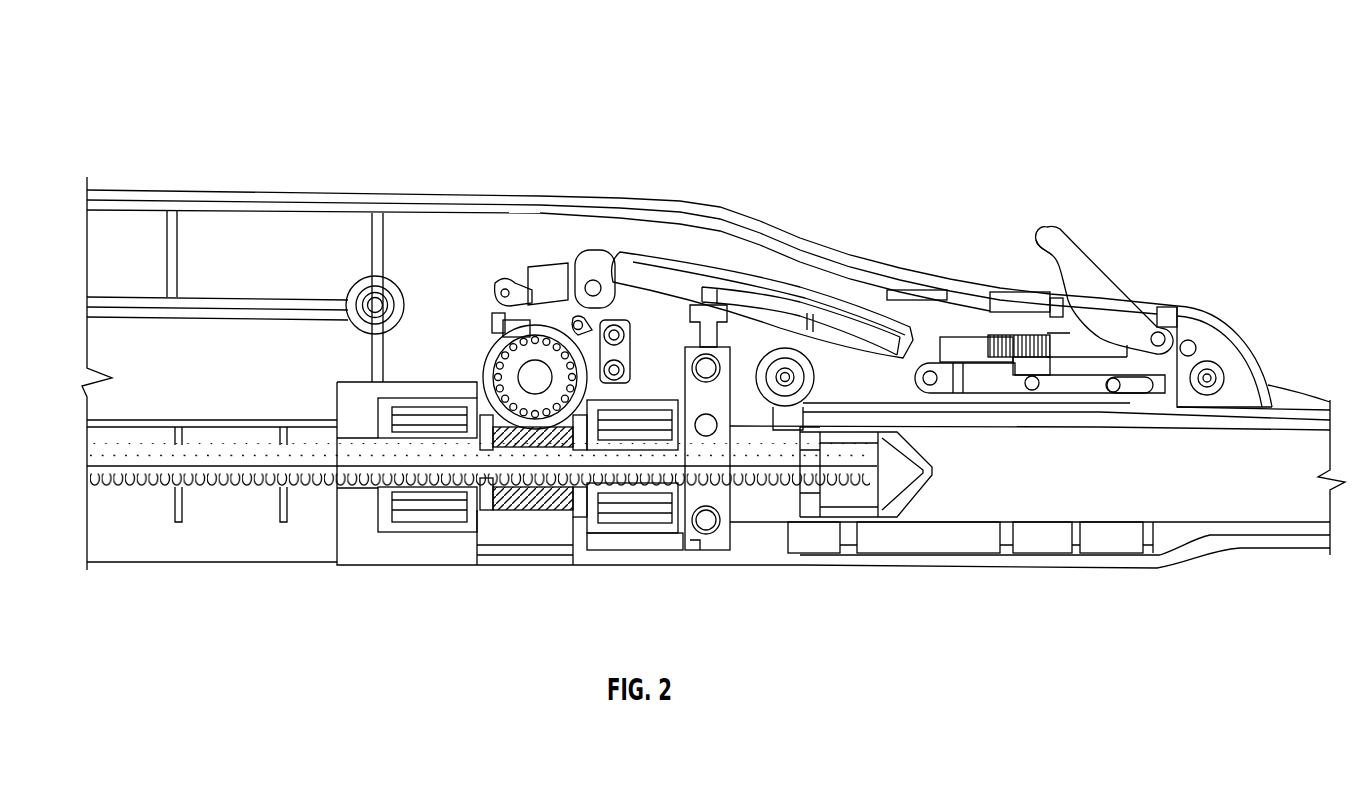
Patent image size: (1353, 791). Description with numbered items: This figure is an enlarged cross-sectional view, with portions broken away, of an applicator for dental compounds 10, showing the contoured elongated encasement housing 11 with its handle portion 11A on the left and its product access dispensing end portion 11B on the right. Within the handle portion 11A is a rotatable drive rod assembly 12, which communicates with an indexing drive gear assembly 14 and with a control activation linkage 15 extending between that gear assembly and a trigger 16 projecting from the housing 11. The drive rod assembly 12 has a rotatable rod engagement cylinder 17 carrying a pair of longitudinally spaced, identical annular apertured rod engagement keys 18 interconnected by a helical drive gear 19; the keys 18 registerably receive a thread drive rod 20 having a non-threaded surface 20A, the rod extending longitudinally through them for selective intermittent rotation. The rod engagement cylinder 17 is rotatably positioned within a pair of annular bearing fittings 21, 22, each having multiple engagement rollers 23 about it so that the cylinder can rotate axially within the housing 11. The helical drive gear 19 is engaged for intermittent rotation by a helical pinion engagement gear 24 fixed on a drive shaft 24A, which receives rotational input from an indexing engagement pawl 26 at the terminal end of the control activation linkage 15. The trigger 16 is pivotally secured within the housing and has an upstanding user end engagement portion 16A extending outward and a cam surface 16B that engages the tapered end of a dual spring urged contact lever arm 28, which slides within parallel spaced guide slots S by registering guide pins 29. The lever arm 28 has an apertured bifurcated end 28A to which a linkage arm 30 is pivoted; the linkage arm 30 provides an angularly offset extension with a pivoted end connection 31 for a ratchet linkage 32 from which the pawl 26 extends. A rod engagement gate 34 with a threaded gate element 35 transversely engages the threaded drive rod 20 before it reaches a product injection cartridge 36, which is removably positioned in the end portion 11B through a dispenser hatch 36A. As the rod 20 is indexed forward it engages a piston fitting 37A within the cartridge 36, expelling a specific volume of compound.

The applicator for dental compounds 10 is at (1010, 178).
The encasement housing 11 is at (700, 210).
The handle portion 11A is at (200, 172).
The product access dispensing end portion 11B is at (1192, 258).
The drive rod assembly 12 is at (328, 363).
The indexing drive gear assembly 14 is at (463, 330).
The control activation linkage 15 is at (797, 252).
The trigger 16 is at (1102, 254).
The user end engagement portion 16A is at (1055, 228).
The cam surface 16B is at (1080, 335).
The rod engagement cylinder 17 is at (603, 548).
The rod engagement keys 18 is at (420, 507).
The helical drive gear 19 is at (492, 558).
The thread drive rod 20 is at (234, 490).
The non-threaded surface 20A is at (150, 470).
The annular bearing fitting 21 is at (335, 548).
The annular bearing fitting 22 is at (768, 276).
The engagement rollers 23 is at (445, 405).
The helical pinion engagement gear 24 is at (378, 300).
The drive shaft 24A is at (560, 508).
The indexing engagement pawl 26 is at (490, 350).
The contact lever arm 28 is at (1012, 383).
The apertured bifurcated end 28A is at (928, 393).
The guide pins 29 is at (1210, 378).
The linkage arm 30 is at (933, 366).
The pivoted end connection 31 is at (605, 250).
The ratchet linkage 32 is at (547, 262).
The rod engagement gate 34 is at (743, 523).
The threaded gate element 35 is at (692, 537).
The product injection cartridge 36 is at (1103, 510).
The dispenser hatch 36A is at (1172, 555).
The piston fitting 37A is at (908, 490).
The guide slots S is at (1097, 400).